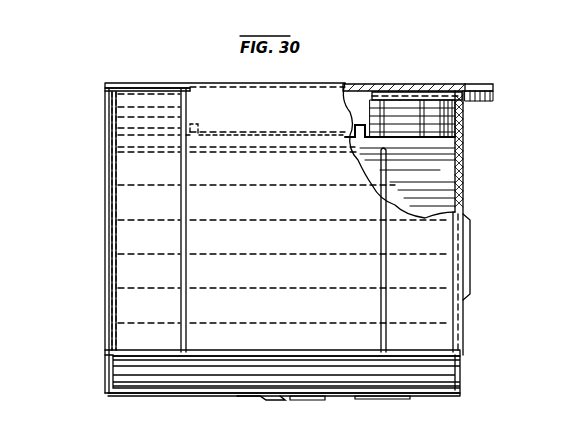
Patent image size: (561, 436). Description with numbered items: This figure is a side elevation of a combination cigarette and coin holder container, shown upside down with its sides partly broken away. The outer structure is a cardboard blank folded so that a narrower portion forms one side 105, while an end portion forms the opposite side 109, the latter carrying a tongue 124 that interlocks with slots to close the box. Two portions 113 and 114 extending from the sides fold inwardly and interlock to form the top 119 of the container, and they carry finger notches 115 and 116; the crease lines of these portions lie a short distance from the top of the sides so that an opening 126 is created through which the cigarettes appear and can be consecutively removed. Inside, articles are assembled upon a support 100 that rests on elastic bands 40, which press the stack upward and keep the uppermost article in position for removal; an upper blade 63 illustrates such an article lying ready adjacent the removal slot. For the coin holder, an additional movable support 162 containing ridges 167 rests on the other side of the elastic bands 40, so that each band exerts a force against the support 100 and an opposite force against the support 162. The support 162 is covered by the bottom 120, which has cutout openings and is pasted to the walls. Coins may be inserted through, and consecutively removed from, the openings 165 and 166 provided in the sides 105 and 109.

The elastic bands 40 is at (184, 96).
The upper blade 63 is at (482, 92).
The support 100 is at (463, 153).
The narrower portion (side) 105 is at (105, 299).
The narrow portion (side) 109 is at (465, 210).
The top portion 113 is at (257, 400).
The top portion 114 is at (312, 400).
The finger notch 115 is at (375, 399).
The finger notch 116 is at (182, 396).
The top 119 is at (432, 398).
The bottom 120 is at (383, 85).
The tongue 124 is at (471, 243).
The opening 126 is at (110, 368).
The movable support 162 is at (458, 137).
The opening 165 is at (466, 88).
The opening 166 is at (106, 88).
The ridges 167 is at (200, 124).